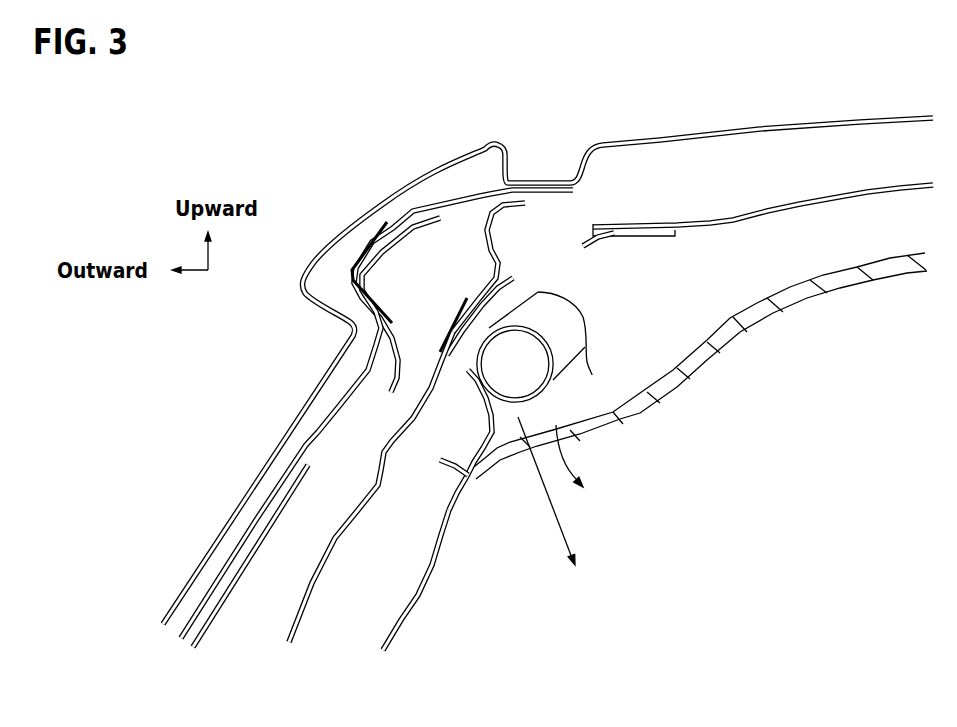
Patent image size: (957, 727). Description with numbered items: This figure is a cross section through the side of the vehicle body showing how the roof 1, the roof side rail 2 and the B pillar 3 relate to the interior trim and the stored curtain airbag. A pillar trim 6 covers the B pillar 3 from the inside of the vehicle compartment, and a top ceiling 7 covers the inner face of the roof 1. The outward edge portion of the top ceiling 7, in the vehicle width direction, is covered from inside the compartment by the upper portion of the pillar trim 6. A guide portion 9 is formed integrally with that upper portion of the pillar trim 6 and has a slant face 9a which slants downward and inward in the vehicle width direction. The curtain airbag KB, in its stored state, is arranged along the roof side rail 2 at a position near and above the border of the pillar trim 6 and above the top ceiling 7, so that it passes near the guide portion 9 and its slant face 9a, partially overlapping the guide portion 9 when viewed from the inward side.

The roof 1 is at (757, 126).
The roof side rail 2 is at (497, 247).
The B pillar 3 is at (296, 638).
The pillar trim 6 is at (406, 612).
The top ceiling 7 is at (671, 384).
The guide portion 9 is at (478, 402).
The slant face 9a is at (495, 418).
The curtain airbag KB is at (563, 320).